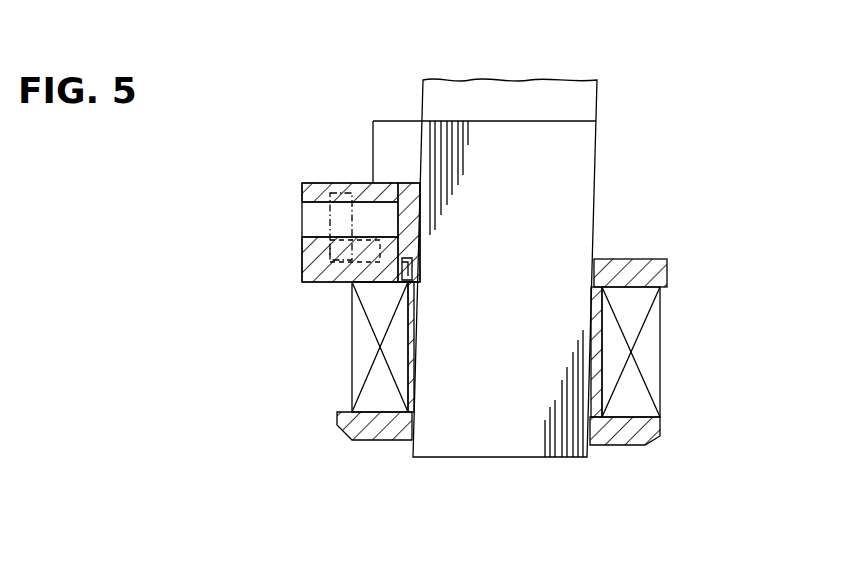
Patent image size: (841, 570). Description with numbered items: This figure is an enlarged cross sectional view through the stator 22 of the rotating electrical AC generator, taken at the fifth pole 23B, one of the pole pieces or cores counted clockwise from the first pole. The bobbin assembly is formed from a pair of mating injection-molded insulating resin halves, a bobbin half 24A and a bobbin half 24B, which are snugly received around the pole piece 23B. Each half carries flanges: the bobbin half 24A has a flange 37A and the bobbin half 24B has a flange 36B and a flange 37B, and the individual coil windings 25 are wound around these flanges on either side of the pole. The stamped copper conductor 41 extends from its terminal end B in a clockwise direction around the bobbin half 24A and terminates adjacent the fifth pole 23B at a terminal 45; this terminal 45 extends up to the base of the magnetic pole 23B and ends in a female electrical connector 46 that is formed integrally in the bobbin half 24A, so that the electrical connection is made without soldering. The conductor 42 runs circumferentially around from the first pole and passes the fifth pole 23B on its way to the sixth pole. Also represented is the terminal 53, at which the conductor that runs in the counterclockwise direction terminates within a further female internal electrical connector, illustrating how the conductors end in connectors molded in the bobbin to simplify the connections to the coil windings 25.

The fifth pole 23B is at (597, 172).
The stator 22 is at (568, 462).
The conductor 41 is at (315, 283).
The female electrical connector 46 is at (330, 182).
The terminal 53 is at (300, 227).
The terminal 45 is at (330, 208).
The conductor 42 is at (400, 272).
The bobbin half 24A is at (378, 445).
The flange 37A is at (365, 437).
The flange 36B is at (650, 258).
The coil windings 25 is at (660, 327).
The bobbin half 24B is at (633, 447).
The flange 37B is at (655, 440).